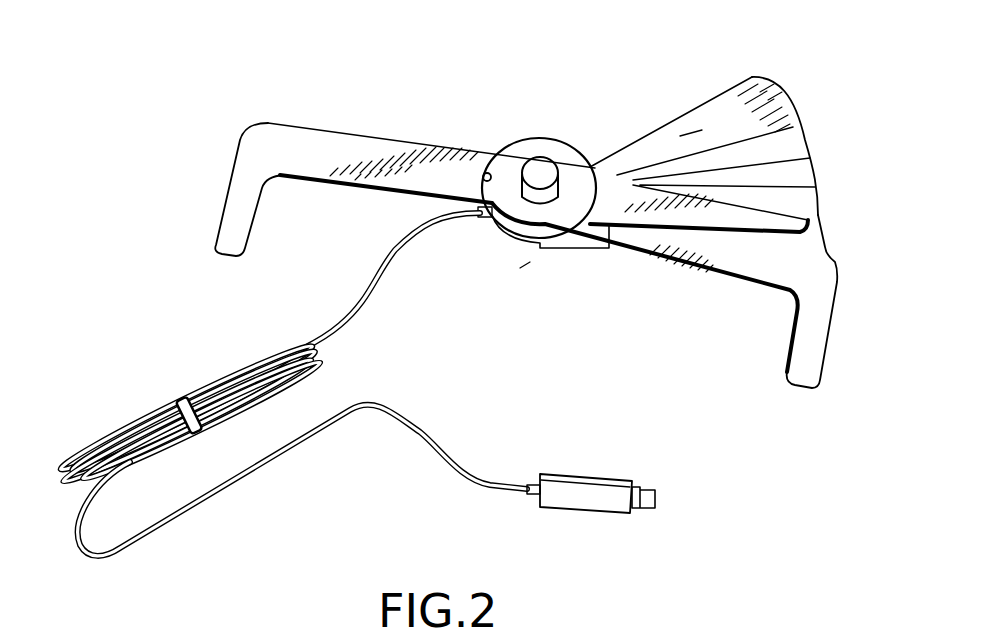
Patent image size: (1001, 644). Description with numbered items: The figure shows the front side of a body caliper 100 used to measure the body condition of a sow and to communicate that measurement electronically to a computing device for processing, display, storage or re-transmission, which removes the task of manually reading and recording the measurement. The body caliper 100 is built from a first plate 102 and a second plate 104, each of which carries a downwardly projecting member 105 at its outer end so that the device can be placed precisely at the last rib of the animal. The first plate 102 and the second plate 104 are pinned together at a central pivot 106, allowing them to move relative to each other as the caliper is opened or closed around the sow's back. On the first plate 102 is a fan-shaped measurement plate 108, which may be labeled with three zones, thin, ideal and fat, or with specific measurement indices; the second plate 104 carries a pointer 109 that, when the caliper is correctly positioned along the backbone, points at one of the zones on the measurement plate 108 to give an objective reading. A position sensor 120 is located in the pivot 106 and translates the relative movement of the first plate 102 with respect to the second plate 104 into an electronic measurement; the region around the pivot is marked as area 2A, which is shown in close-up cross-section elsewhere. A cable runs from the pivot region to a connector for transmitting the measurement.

The body caliper 100 is at (443, 103).
The first plate 102 is at (815, 275).
The second plate 104 is at (320, 148).
The downwardly projecting member 105 is at (230, 228).
The pivot 106 is at (580, 124).
The measurement plate 108 is at (773, 100).
The pointer 109 is at (808, 212).
The position sensor 120 is at (540, 172).
The area 2A is at (520, 268).